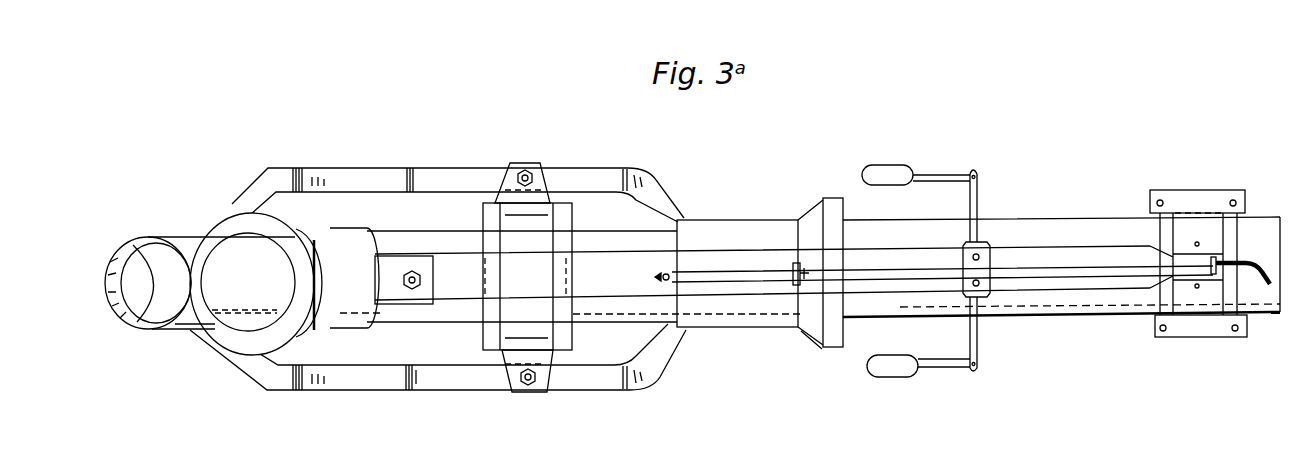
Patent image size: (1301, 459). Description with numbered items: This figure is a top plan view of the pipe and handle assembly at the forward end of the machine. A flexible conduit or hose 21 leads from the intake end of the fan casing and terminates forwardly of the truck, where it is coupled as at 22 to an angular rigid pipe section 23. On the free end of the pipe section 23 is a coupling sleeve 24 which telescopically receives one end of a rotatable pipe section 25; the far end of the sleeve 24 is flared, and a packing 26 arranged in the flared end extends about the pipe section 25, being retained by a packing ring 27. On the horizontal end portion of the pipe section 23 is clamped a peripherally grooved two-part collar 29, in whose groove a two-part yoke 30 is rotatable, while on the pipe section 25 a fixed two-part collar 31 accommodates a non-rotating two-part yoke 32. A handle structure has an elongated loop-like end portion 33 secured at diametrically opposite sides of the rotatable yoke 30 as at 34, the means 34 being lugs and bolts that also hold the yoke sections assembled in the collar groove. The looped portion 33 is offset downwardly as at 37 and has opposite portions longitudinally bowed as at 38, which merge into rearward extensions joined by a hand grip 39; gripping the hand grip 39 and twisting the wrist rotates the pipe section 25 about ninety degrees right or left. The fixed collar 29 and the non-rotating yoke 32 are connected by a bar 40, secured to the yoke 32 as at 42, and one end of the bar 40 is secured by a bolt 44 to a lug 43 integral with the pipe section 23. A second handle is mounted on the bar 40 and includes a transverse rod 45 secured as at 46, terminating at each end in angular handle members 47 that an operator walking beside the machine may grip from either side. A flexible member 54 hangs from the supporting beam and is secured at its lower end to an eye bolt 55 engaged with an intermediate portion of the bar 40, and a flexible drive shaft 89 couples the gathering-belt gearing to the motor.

The flexible conduit or hose 21 is at (152, 238).
The coupling 22 is at (290, 330).
The angular rigid pipe section 23 is at (383, 313).
The coupling sleeve 24 is at (778, 313).
The rotatable pipe section 25 is at (1086, 225).
The packing 26 is at (823, 342).
The packing ring 27 is at (831, 200).
The two-part collar 29 is at (491, 338).
The two-part yoke 30 is at (510, 212).
The two-part collar 31 is at (1162, 332).
The two-part yoke 32 is at (1200, 195).
The loop-like end portion 33 is at (358, 163).
The securing means 34 is at (530, 176).
The downward offset 37 is at (639, 186).
The bowed portions 38 is at (318, 183).
The hand grip 39 is at (185, 328).
The bar 40 is at (716, 262).
The securing point 42 is at (1200, 290).
The lug 43 is at (399, 296).
The bolt 44 is at (424, 279).
The transverse rod 45 is at (978, 343).
The securing point 46 is at (984, 248).
The angular handle members 47 is at (922, 180).
The flexible member 54 is at (794, 268).
The eye bolt 55 is at (803, 270).
The flexible drive shaft 89 is at (731, 280).